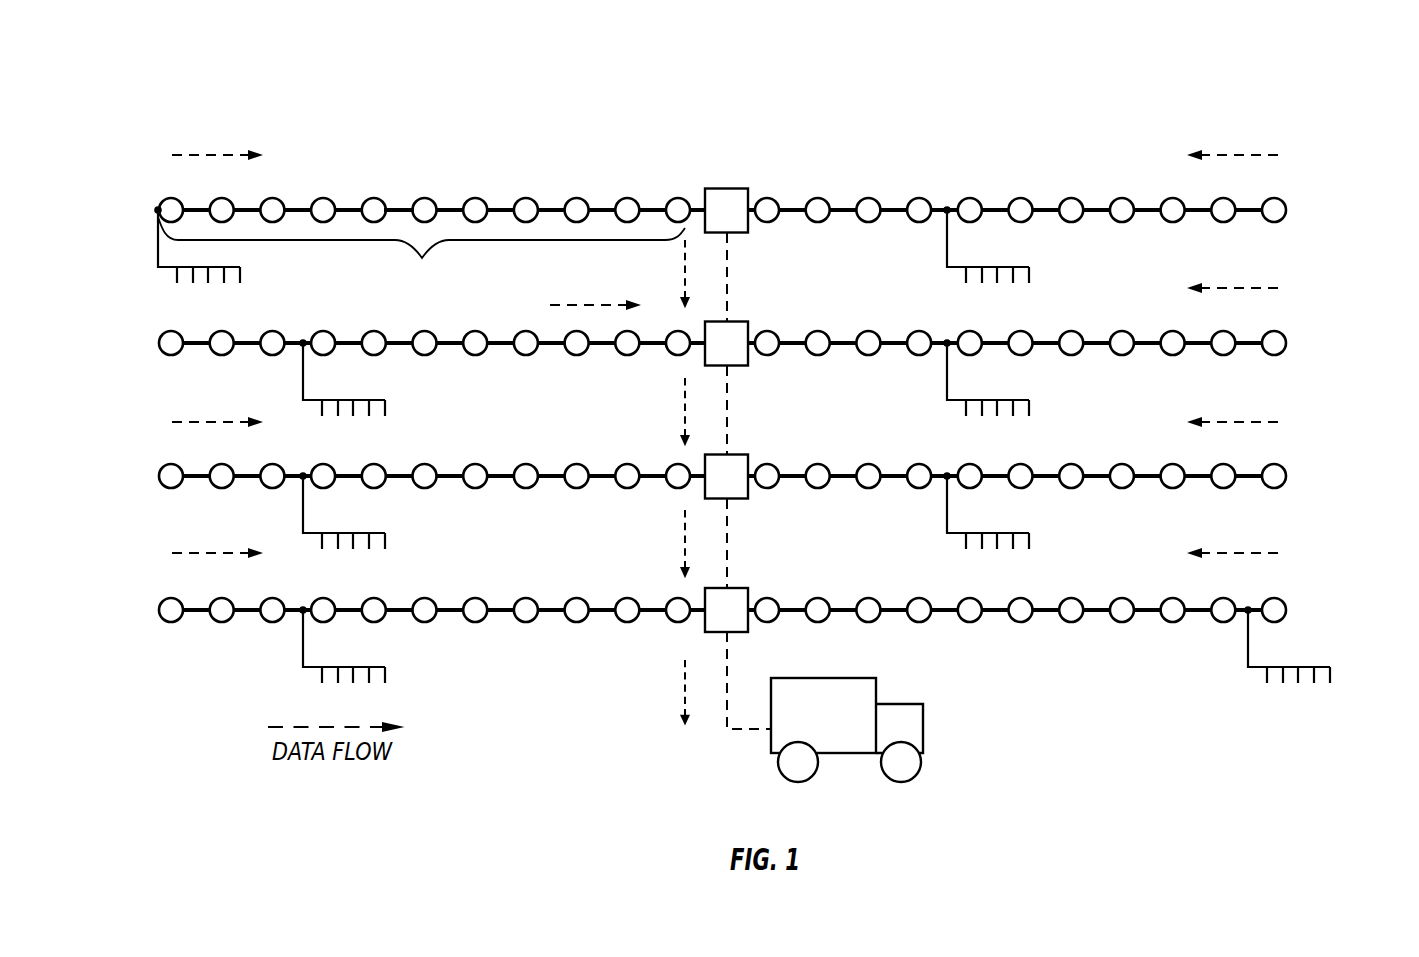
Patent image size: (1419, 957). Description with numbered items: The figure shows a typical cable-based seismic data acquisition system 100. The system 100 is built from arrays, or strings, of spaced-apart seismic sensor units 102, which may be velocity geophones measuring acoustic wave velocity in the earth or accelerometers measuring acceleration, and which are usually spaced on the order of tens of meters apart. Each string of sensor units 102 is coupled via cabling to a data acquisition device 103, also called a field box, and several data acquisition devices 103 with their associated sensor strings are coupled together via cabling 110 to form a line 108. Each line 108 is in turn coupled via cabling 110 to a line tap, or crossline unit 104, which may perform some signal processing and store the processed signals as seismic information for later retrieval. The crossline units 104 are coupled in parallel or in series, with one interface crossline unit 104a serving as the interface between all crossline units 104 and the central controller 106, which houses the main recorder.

The cable-based seismic data acquisition system 100 is at (357, 93).
The seismic sensor unit 102 is at (240, 270).
The data acquisition device 103 is at (1278, 212).
The crossline unit 104 is at (740, 188).
The interface crossline unit 104a is at (740, 588).
The central controller 106 is at (899, 704).
The line 108 is at (421, 254).
The cabling 110 is at (396, 220).